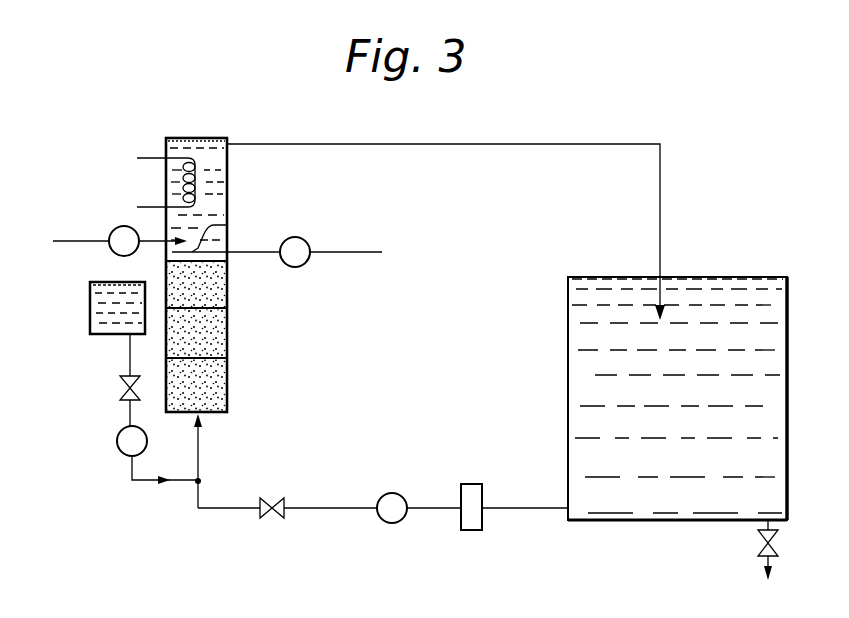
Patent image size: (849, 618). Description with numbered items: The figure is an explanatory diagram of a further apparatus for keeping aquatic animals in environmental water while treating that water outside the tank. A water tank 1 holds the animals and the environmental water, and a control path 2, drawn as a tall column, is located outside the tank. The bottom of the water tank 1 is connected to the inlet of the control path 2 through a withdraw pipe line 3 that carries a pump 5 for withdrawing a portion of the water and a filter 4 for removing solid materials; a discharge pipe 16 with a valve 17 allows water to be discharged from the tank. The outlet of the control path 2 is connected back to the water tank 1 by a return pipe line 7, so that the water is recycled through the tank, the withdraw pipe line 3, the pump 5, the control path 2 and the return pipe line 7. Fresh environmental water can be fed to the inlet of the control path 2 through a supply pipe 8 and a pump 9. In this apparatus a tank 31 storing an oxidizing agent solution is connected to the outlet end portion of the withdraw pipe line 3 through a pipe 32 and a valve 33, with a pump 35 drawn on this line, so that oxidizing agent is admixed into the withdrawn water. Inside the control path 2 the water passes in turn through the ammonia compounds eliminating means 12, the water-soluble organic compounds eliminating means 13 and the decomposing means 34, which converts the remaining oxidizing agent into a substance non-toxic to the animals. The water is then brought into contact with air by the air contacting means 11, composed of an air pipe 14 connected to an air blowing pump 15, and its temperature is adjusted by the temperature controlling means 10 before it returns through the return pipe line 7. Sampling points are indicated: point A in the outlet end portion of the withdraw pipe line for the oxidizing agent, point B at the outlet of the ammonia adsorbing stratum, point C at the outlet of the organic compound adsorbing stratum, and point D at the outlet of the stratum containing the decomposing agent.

The water tank 1 is at (787, 393).
The control path 2 is at (240, 327).
The withdraw pipe line 3 is at (432, 513).
The filter 4 is at (478, 519).
The pump 5 is at (390, 523).
The return pipe line 7 is at (485, 143).
The supply pipe 8 is at (147, 245).
The pump 9 is at (112, 230).
The temperature controlling means 10 is at (193, 183).
The air contacting means 11 is at (227, 225).
The ammonia compounds eliminating means 12 is at (217, 393).
The water-soluble organic compounds eliminating means 13 is at (217, 345).
The air pipe 14 is at (280, 243).
The air blowing pump 15 is at (312, 246).
The discharge pipe 16 is at (272, 518).
The valve 17 is at (764, 542).
The tank for oxidizing agent solution 31 is at (90, 312).
The pipe 32 is at (128, 350).
The valve 33 is at (128, 390).
The decomposing means 34 is at (217, 292).
The pump 35 is at (117, 445).
The sampling point A is at (200, 432).
The sampling point B is at (227, 358).
The sampling point C is at (227, 310).
The sampling point D is at (227, 265).